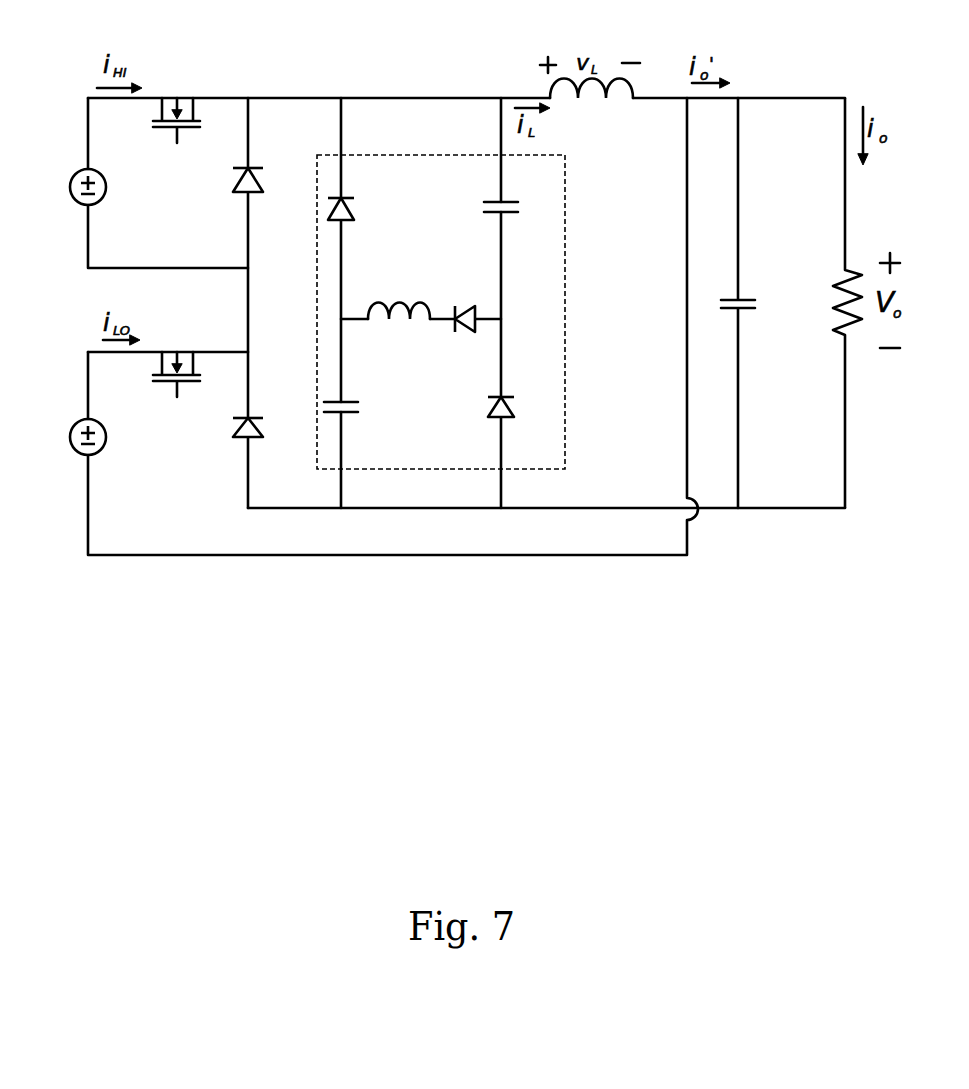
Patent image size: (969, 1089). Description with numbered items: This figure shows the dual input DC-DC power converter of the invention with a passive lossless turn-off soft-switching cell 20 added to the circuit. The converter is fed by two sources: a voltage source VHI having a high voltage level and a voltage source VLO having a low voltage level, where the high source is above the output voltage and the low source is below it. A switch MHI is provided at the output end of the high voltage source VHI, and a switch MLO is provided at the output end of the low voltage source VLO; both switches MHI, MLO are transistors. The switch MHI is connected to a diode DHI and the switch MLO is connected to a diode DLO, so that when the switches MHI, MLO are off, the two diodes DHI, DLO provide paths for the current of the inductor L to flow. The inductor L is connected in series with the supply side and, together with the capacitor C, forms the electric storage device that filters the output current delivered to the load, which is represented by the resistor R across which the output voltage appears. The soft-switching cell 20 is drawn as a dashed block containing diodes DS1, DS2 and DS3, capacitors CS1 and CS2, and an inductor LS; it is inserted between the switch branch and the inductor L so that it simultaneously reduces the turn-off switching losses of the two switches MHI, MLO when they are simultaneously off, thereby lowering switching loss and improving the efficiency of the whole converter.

The passive lossless turn-off soft-switching cell 20 is at (441, 254).
The voltage source having a high voltage level VHI is at (74, 187).
The voltage source having a low voltage level VLO is at (74, 439).
The switch MHI is at (176, 104).
The switch MLO is at (176, 358).
The diode DHI is at (268, 185).
The diode DLO is at (270, 436).
The inductor L is at (591, 107).
The capacitor C is at (751, 303).
The load resistor R is at (832, 303).
The snubber diode 1 DS1 is at (369, 209).
The snubber diode 2 DS2 is at (526, 410).
The snubber diode 3 DS3 is at (462, 297).
The snubber capacitor 1 CS1 is at (364, 410).
The snubber capacitor 2 CS2 is at (523, 210).
The snubber inductor LS is at (399, 291).